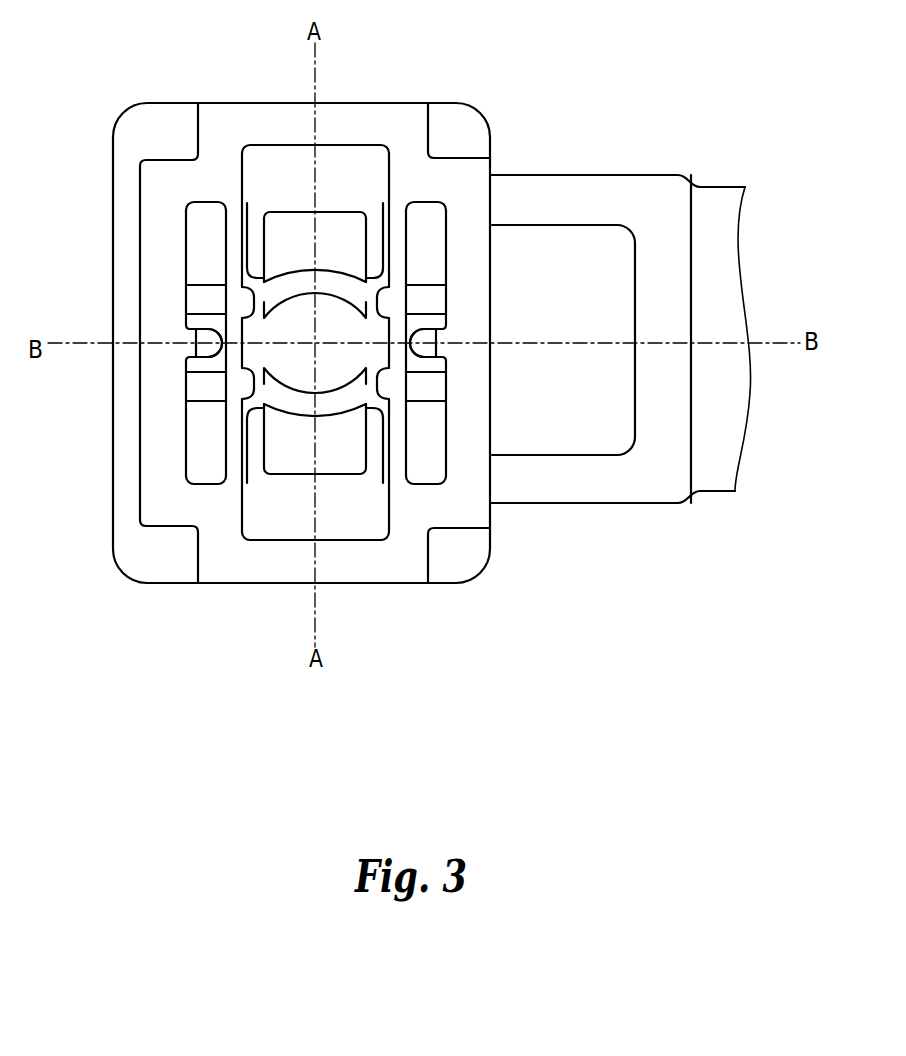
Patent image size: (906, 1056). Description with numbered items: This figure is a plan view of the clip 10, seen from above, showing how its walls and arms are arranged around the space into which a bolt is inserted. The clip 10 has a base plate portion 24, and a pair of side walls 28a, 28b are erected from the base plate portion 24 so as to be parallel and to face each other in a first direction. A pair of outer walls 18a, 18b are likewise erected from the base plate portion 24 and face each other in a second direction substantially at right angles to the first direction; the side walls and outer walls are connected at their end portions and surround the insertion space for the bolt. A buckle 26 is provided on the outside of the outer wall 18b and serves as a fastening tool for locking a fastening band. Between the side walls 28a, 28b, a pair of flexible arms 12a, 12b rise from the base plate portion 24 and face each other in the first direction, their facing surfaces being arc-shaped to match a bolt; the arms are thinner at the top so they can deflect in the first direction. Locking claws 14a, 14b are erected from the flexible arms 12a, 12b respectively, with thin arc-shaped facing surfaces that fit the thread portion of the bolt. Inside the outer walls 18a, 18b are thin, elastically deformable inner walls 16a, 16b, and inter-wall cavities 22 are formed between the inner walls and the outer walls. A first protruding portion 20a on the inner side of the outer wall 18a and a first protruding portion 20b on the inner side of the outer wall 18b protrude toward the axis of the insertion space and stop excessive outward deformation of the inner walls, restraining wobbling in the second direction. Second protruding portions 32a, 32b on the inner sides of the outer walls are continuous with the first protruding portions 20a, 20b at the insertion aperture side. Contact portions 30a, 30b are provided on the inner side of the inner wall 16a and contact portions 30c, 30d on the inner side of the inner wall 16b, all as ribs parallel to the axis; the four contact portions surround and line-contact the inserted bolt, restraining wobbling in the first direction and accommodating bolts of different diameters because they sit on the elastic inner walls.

The clip 10 is at (420, 722).
The flexible arm 12a is at (295, 230).
The flexible arm 12b is at (330, 457).
The locking claw 14a is at (283, 297).
The locking claw 14b is at (302, 405).
The inner wall 16a is at (232, 437).
The inner wall 16b is at (397, 418).
The outer wall 18a is at (162, 298).
The outer wall 18b is at (468, 418).
The first protruding portion 20a is at (195, 342).
The first protruding portion 20b is at (437, 338).
The inter-wall cavity 22 is at (196, 226).
The base plate portion 24 is at (112, 517).
The buckle 26 is at (663, 492).
The side wall 28a is at (363, 118).
The side wall 28b is at (400, 562).
The contact portion 30a is at (242, 303).
The contact portion 30b is at (242, 388).
The contact portion 30c is at (390, 300).
The contact portion 30d is at (390, 385).
The second protruding portion 32a is at (213, 350).
The second protruding portion 32b is at (417, 330).